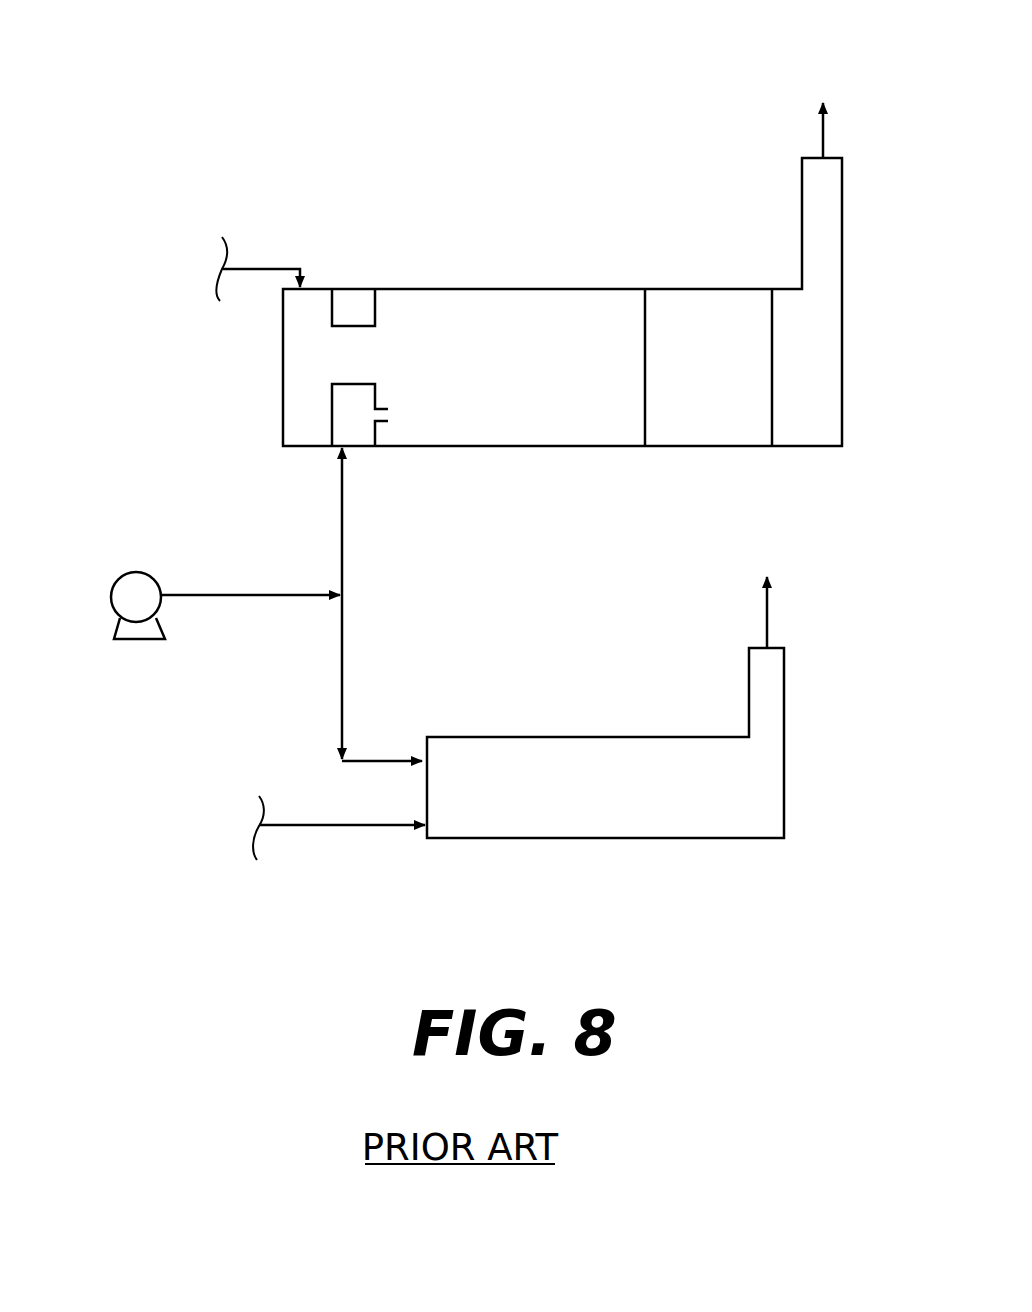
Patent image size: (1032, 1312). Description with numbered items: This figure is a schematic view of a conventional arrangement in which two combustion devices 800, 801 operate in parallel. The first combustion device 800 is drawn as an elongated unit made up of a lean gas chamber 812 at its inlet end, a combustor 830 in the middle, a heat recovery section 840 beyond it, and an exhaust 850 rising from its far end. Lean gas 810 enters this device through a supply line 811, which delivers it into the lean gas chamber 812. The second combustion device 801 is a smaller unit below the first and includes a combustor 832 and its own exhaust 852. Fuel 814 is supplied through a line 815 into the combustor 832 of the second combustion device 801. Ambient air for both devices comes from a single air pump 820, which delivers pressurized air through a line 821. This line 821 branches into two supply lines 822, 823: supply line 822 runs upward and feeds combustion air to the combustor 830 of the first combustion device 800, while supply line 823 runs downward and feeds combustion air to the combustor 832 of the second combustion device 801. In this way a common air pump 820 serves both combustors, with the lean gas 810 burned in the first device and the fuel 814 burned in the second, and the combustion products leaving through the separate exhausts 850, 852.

The combustion device 800 is at (433, 287).
The combustion device 801 is at (618, 735).
The lean gas 810 is at (180, 268).
The supply line 811 is at (243, 268).
The lean gas chamber 812 is at (293, 328).
The fuel 814 is at (214, 827).
The line 815 is at (282, 826).
The air pump 820 is at (109, 597).
The line 821 is at (195, 594).
The supply line 822 is at (343, 549).
The supply line 823 is at (343, 704).
The combustor 830 is at (537, 378).
The combustor 832 is at (578, 797).
The heat recovery section 840 is at (740, 378).
The exhaust 850 is at (823, 97).
The exhaust 852 is at (767, 578).